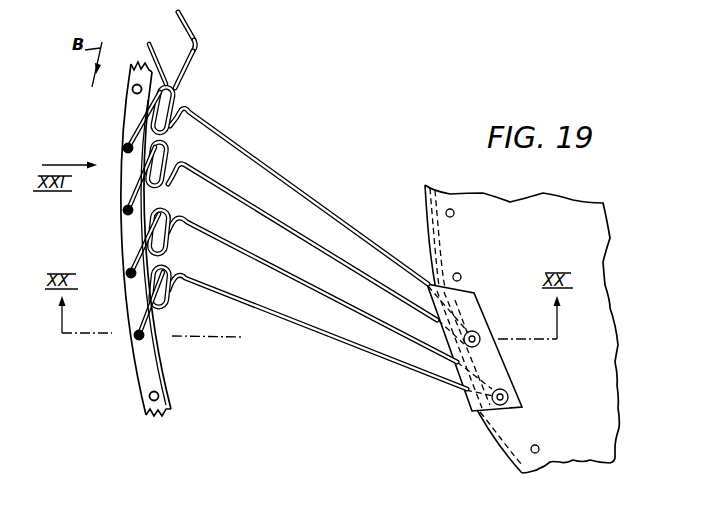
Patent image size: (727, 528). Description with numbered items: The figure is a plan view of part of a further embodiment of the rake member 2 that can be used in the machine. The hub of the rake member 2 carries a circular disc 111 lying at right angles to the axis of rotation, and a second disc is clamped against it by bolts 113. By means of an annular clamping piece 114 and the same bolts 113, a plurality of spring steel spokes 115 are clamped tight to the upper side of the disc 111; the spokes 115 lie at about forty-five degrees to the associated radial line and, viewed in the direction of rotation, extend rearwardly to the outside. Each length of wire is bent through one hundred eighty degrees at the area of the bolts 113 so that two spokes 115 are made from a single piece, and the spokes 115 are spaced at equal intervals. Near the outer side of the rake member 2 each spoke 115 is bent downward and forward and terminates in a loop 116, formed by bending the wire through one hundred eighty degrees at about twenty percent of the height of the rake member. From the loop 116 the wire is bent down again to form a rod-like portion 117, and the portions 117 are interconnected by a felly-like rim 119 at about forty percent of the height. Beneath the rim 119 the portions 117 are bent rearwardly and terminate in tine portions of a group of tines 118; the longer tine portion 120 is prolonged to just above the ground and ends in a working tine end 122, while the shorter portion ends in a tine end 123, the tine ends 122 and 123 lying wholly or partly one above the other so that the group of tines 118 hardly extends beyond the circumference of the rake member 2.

The rake member 2 is at (100, 322).
The circular disc 111 is at (573, 459).
The bolts 113 is at (505, 397).
The annular clamping piece 114 is at (460, 295).
The spring steel spokes 115 is at (404, 338).
The loop 116 is at (182, 300).
The rod-like portion 117 is at (128, 195).
The group of tines 118 is at (202, 54).
The felly-like rim 119 is at (143, 374).
The tine portion 120 is at (186, 80).
The working tine end 122 is at (191, 27).
The tine end 123 is at (166, 37).